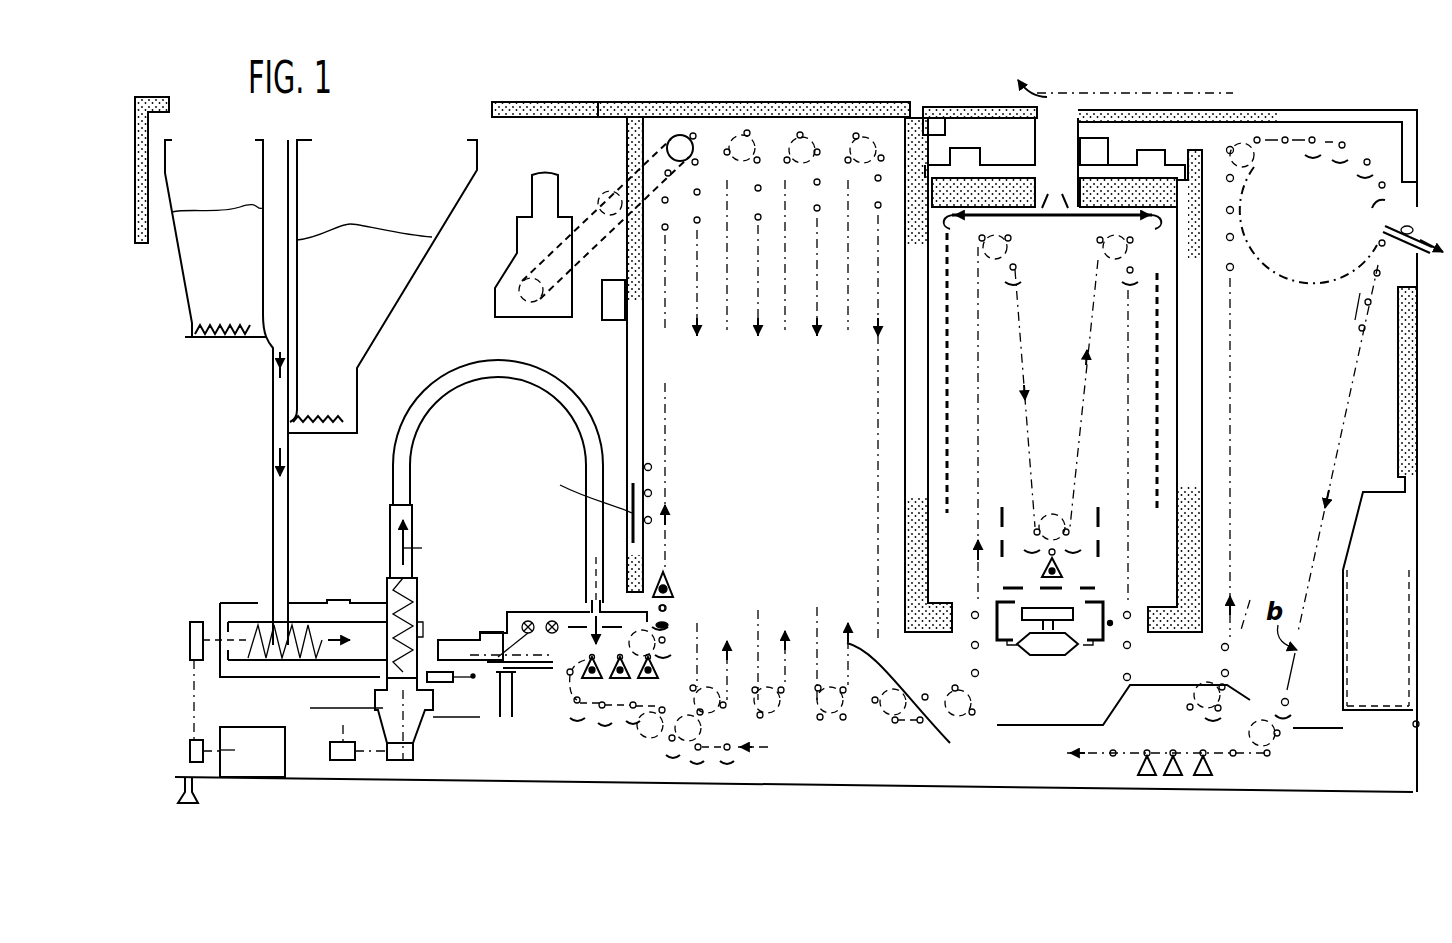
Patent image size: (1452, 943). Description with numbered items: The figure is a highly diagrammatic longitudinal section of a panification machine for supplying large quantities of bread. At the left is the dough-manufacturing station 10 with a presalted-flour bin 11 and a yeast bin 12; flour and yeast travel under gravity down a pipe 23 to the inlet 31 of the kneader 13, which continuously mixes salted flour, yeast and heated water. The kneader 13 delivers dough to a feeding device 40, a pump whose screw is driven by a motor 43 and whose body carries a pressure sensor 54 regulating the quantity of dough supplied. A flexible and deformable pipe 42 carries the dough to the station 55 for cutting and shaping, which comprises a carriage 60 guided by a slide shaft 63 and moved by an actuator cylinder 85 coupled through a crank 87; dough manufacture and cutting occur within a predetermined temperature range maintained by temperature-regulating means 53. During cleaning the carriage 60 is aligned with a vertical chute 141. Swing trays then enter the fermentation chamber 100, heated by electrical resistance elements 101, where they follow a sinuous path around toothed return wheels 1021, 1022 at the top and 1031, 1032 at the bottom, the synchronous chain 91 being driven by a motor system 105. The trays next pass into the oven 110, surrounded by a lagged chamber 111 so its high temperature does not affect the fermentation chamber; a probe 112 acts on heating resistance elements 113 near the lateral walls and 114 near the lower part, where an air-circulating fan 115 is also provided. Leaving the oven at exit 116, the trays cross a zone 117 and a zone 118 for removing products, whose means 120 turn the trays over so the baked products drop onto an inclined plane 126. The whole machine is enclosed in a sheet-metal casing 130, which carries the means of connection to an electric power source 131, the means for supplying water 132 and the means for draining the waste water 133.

The dough-manufacturing station 10 is at (243, 386).
The presalted-flour bin 11 is at (396, 302).
The yeast bin 12 is at (191, 283).
The kneader 13 is at (247, 675).
The pipe 23 is at (273, 504).
The inlet of the kneader 31 is at (278, 612).
The feeding device 40 is at (424, 606).
The flexible and deformable pipe 42 is at (507, 373).
The motor 43 is at (413, 757).
The temperature-regulating means 53 is at (609, 307).
The pressure sensor 54 is at (430, 626).
The cutting and shaping station 55 is at (581, 603).
The carriage 60 is at (497, 630).
The slide shaft 63 is at (516, 652).
The actuator cylinder 85 is at (443, 684).
The crank 87 is at (478, 697).
The synchronous chain 91 is at (1048, 710).
The fermentation chamber 100 is at (777, 128).
The electrical resistance elements 101 is at (646, 465).
The toothed return wheel 1021 is at (684, 136).
The toothed return wheel 1022 is at (818, 128).
The toothed return wheel 1031 is at (773, 703).
The toothed return wheel 1032 is at (836, 712).
The motor system 105 is at (576, 191).
The oven 110 is at (1074, 249).
The lagged chamber 111 is at (921, 127).
The probe 112 is at (1098, 145).
The heating resistance element 113 is at (1162, 440).
The heating resistance element 114 is at (1100, 548).
The air-circulating fan 115 is at (1042, 652).
The exit 116 is at (1110, 623).
The zone 117 is at (1240, 637).
The zone for removing the manufactured products 118 is at (1366, 133).
The means for turning over the swing trays 120 is at (1298, 168).
The inclined plane 126 is at (1398, 247).
The sheet-metal casing 130 is at (1400, 380).
The means of connection to an electric power source 131 is at (192, 786).
The means for supplying water 132 is at (365, 765).
The means for draining the waste water 133 is at (627, 768).
The vertical chute 141 is at (516, 721).